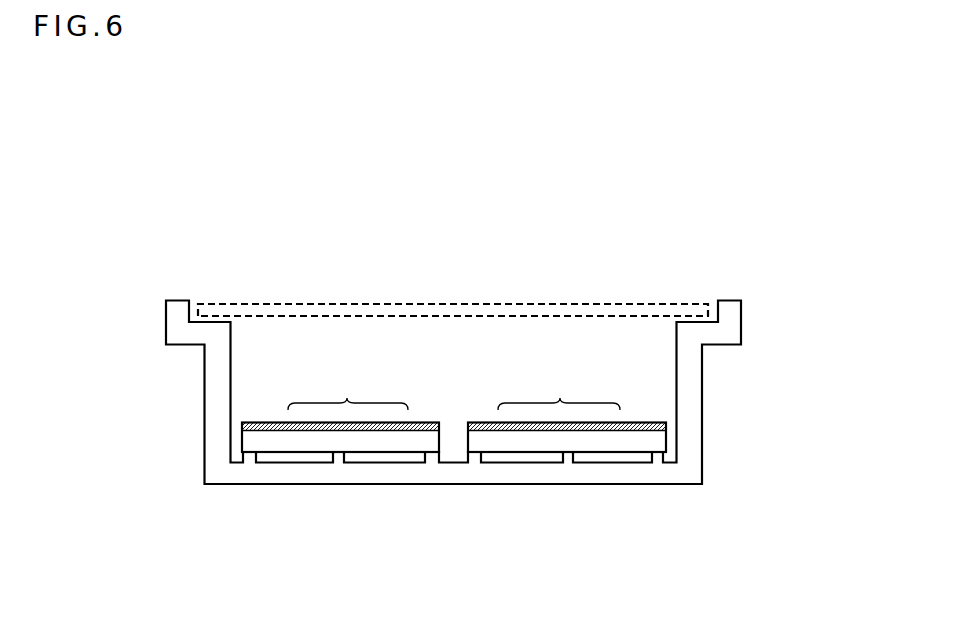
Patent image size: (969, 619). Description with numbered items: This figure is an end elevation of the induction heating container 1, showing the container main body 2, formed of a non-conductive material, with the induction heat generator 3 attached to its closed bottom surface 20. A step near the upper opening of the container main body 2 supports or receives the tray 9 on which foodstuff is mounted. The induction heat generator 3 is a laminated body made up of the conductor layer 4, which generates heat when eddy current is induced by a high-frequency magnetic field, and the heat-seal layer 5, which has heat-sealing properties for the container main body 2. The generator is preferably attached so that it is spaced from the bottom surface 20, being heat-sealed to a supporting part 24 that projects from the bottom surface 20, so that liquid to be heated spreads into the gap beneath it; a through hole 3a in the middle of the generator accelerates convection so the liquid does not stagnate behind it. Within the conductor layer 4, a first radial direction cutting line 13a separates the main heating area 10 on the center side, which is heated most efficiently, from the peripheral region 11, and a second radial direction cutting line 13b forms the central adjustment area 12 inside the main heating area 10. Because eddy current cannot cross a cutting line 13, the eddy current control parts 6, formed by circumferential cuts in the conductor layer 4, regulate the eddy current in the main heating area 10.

The induction heating container 1 is at (345, 153).
The container main body 2 is at (176, 326).
The induction heat generator 3 is at (496, 395).
The through hole 3a is at (468, 441).
The conductor layer 4 is at (666, 427).
The heat-seal layer 5 is at (653, 442).
The eddy current control part 6 is at (297, 430).
The tray 9 is at (689, 304).
The main heating area 10 is at (347, 398).
The peripheral region 11 is at (260, 422).
The central adjustment area 12 is at (434, 422).
The cutting line 13 is at (454, 427).
The first radial direction cutting line 13a is at (281, 430).
The second radial direction cutting line 13b is at (423, 430).
The bottom surface 20 is at (234, 460).
The supporting part 24 is at (250, 457).